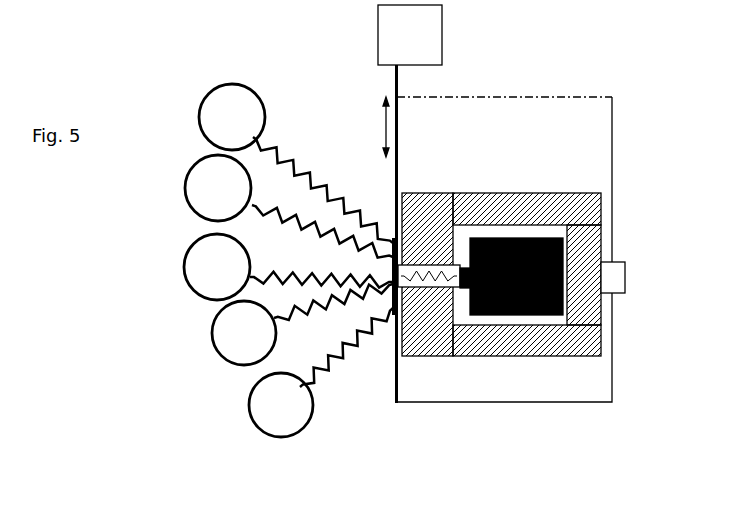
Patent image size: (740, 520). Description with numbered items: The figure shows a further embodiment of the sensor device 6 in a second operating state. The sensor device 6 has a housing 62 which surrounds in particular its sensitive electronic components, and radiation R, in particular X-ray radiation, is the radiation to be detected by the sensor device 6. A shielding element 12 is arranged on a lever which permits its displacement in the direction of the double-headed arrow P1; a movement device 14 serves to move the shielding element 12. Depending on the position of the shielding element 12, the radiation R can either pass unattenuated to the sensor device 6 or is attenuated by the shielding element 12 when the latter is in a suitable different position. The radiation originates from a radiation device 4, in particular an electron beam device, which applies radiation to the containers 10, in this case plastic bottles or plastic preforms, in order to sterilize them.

The containers 10 is at (227, 110).
The radiation R is at (300, 167).
The movement device 14 is at (410, 35).
The shielding element 12 is at (403, 312).
The housing 62 is at (478, 212).
The radiation device 4 is at (442, 278).
The sensor device 6 is at (540, 238).
The double-headed arrow P1 is at (372, 127).